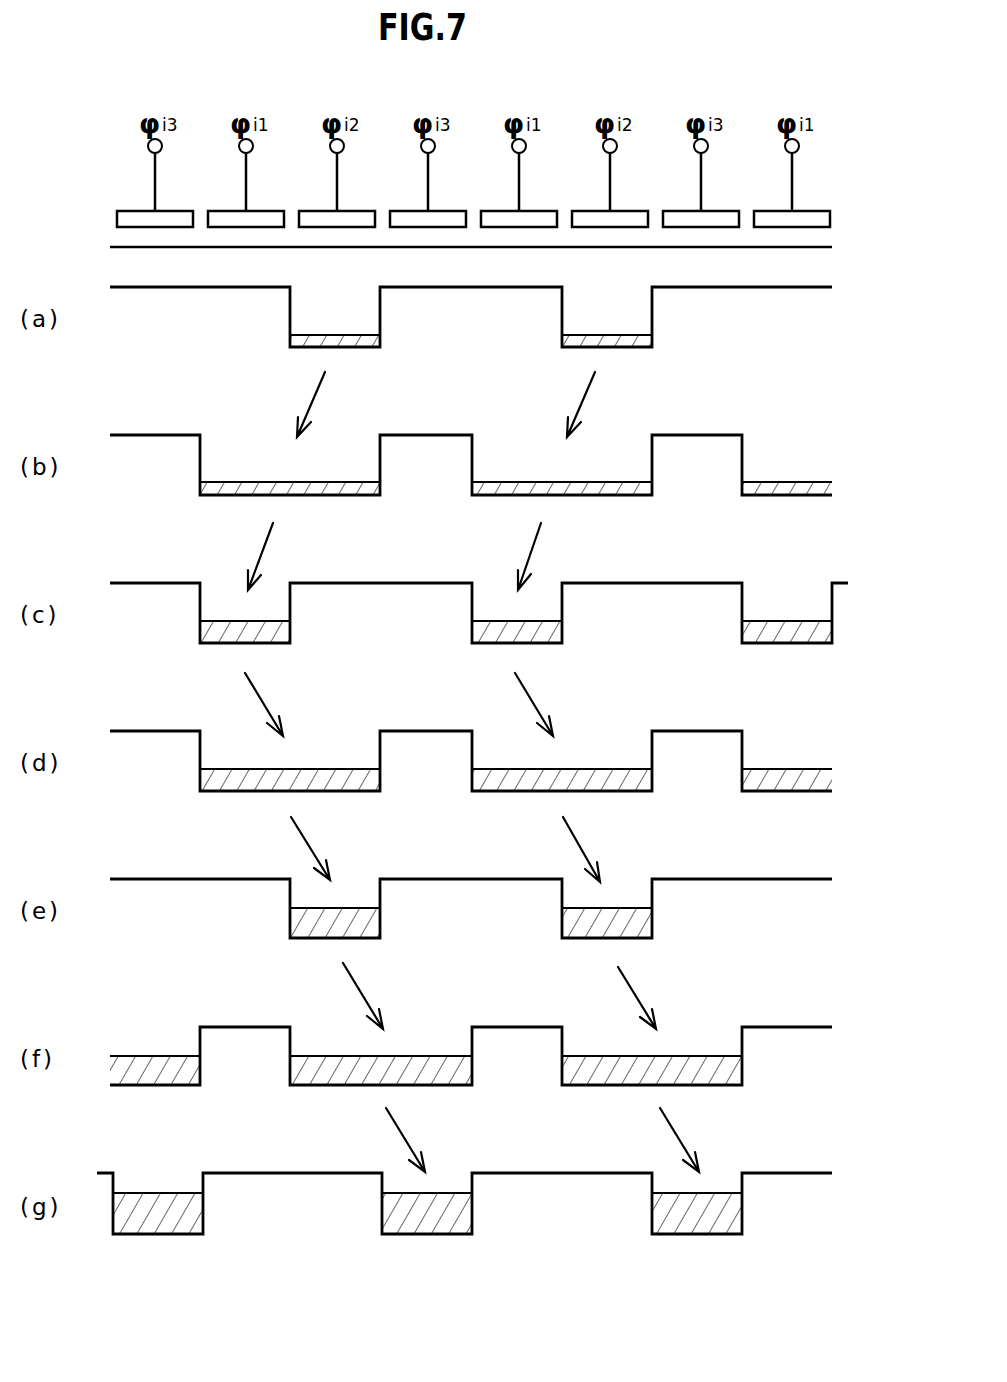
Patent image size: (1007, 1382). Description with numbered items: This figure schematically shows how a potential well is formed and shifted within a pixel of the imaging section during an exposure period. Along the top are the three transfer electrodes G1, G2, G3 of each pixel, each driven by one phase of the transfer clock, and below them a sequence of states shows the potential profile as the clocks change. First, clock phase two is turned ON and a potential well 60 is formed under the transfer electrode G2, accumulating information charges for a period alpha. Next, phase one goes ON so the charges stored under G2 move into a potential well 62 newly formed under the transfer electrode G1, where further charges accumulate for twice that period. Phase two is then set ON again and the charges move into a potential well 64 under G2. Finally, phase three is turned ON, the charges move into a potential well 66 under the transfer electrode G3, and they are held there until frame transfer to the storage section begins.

The potential well 60 is at (381, 313).
The potential well 62 is at (291, 610).
The potential well 64 is at (381, 920).
The potential well 66 is at (473, 1213).
The transfer electrode G1 is at (227, 211).
The transfer electrode G2 is at (318, 211).
The transfer electrode G3 is at (409, 211).